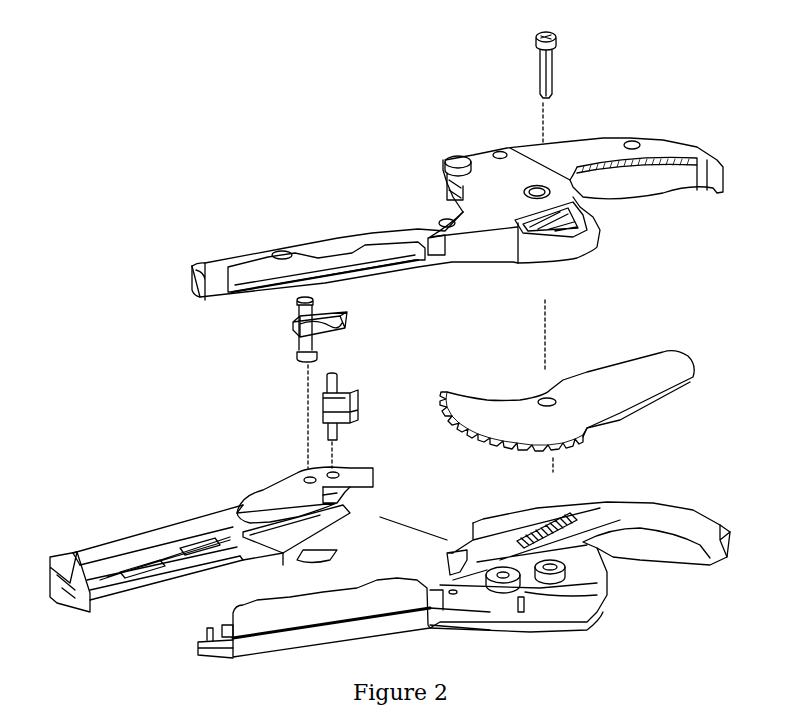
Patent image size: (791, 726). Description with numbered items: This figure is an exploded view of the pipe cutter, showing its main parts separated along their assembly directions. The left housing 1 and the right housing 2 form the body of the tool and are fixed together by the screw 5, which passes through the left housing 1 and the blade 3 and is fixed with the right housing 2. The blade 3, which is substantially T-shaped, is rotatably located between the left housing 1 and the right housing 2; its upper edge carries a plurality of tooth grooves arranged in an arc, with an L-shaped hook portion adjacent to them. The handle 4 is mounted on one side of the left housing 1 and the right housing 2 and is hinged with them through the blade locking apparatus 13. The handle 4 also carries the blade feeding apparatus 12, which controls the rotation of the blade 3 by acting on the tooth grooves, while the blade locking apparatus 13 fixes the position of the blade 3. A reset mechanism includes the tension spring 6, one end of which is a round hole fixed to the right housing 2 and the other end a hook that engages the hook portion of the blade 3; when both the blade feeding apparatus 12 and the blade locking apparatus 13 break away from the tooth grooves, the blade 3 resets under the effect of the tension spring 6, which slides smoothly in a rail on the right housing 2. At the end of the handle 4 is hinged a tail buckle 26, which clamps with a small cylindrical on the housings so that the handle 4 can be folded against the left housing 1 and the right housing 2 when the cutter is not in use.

The left housing 1 is at (470, 222).
The right housing 2 is at (600, 615).
The blade 3 is at (663, 378).
The handle 4 is at (263, 507).
The screw 5 is at (547, 93).
The tension spring 6 is at (627, 556).
The blade feeding apparatus 12 is at (297, 345).
The blade locking apparatus 13 is at (323, 405).
The tail buckle 26 is at (70, 577).